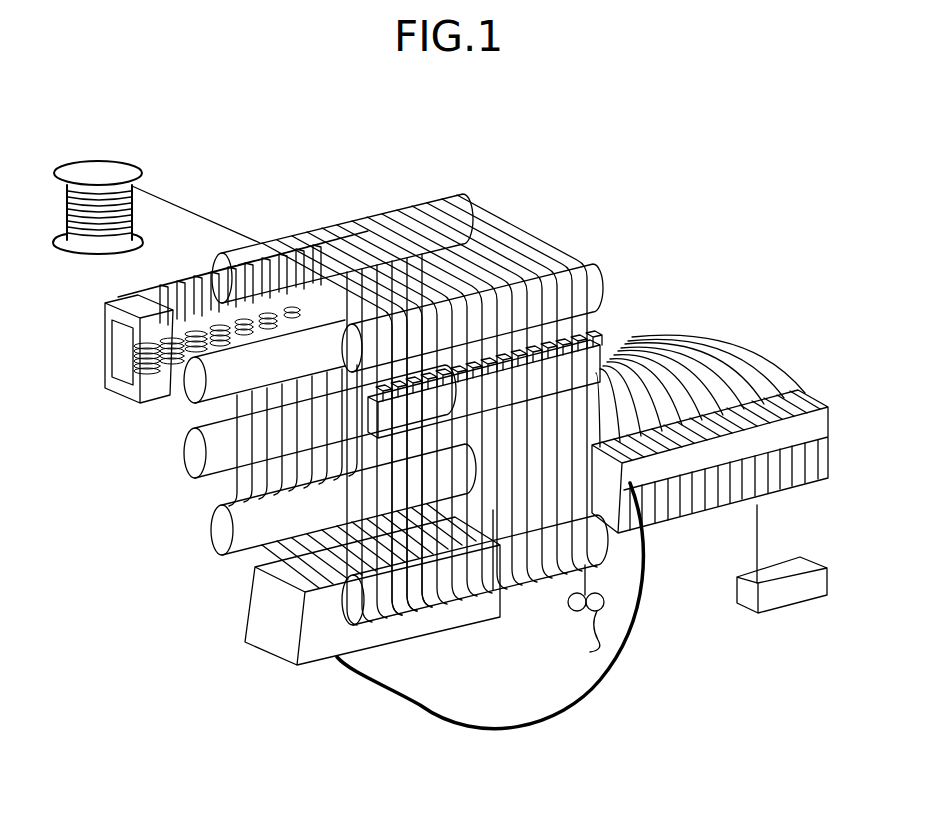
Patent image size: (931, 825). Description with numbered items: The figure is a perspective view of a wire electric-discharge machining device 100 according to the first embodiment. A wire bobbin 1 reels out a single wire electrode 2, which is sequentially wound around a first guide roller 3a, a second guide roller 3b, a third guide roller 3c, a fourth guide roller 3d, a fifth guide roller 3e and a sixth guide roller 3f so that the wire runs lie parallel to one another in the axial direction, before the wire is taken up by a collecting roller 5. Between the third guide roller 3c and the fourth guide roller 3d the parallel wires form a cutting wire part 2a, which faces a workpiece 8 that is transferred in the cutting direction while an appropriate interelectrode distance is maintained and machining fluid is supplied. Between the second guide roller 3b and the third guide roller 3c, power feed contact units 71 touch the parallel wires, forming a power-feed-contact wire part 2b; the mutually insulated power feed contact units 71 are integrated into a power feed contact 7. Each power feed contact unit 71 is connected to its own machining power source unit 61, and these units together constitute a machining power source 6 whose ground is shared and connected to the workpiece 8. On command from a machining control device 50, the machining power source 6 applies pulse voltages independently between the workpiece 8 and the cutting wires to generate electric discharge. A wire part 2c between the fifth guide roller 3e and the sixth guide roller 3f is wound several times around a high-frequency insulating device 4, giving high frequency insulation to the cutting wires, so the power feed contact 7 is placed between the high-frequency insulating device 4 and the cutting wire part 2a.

The wire bobbin 1 is at (100, 163).
The wire electrode 2 is at (186, 205).
The cutting wire part 2a is at (273, 542).
The power-feed-contact wire part 2b is at (494, 590).
The wire part 2c is at (235, 404).
The first guide roller 3a is at (240, 250).
The second guide roller 3b is at (600, 288).
The third guide roller 3c is at (345, 608).
The fourth guide roller 3d is at (215, 530).
The fifth guide roller 3e is at (190, 458).
The sixth guide roller 3f is at (193, 388).
The high-frequency insulating device 4 is at (101, 305).
The collecting roller 5 is at (570, 608).
The machining power source 6 is at (817, 490).
The machining power source units 61 is at (806, 392).
The power feed contact 7 is at (622, 340).
The power feed contact units 71 is at (596, 332).
The workpiece 8 is at (257, 623).
The machining control device 50 is at (784, 561).
The wire electric-discharge machining device 100 is at (722, 669).